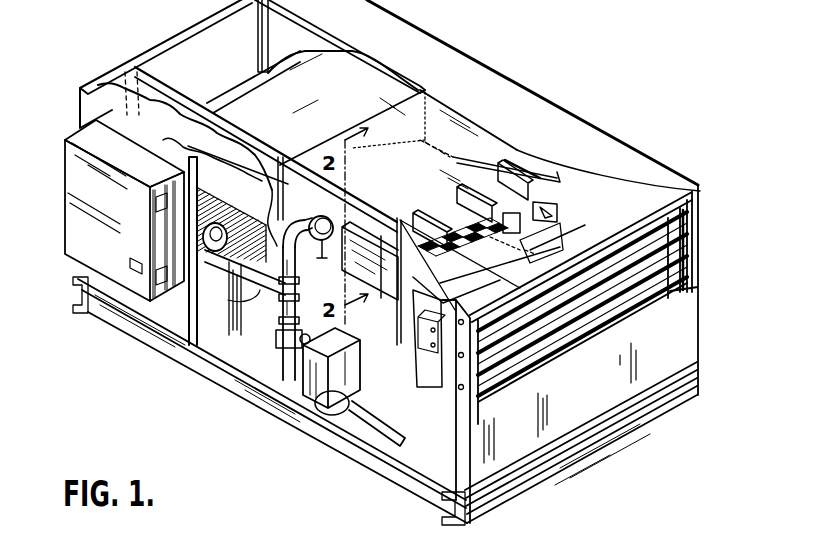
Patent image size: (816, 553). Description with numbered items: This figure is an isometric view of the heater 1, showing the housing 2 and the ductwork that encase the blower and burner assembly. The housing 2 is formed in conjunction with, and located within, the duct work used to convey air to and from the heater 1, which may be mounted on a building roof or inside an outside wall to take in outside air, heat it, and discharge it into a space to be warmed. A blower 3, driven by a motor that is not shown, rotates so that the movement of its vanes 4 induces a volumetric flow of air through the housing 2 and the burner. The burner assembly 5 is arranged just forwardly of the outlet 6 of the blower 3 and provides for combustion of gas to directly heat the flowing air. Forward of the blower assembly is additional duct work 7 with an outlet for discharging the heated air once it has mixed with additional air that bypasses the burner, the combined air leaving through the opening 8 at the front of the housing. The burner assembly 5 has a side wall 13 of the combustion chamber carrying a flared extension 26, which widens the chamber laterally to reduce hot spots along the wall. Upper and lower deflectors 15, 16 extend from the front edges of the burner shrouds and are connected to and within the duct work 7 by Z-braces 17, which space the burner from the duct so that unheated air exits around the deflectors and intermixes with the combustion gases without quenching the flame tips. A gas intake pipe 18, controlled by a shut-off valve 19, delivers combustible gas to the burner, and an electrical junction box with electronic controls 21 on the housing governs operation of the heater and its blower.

The heater 1 is at (437, 56).
The housing 2 is at (540, 78).
The blower 3 is at (237, 98).
The vanes 4 is at (223, 252).
The burner assembly 5 is at (410, 185).
The outlet 6 is at (375, 107).
The duct work 7 is at (440, 378).
The opening 8 is at (698, 256).
The side wall 13 is at (318, 213).
The upper deflector 15 is at (544, 192).
The lower deflector 16 is at (537, 240).
The Z-braces 17 is at (520, 173).
The gas intake pipe 18 is at (277, 345).
The shut-off valve 19 is at (302, 404).
The electrical junction box and electronic controls 21 is at (65, 227).
The flared extension 26 is at (382, 298).